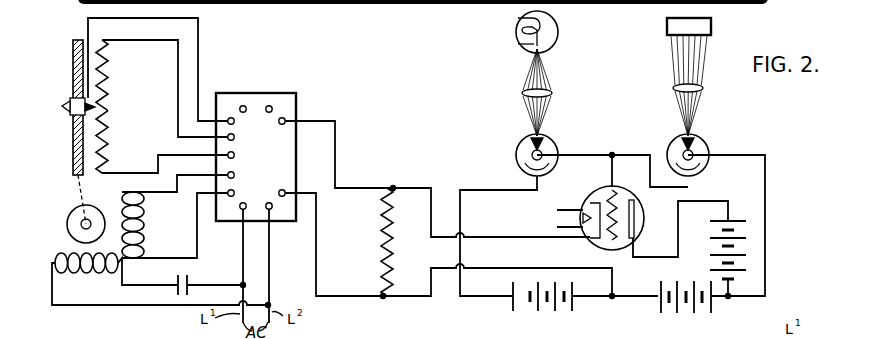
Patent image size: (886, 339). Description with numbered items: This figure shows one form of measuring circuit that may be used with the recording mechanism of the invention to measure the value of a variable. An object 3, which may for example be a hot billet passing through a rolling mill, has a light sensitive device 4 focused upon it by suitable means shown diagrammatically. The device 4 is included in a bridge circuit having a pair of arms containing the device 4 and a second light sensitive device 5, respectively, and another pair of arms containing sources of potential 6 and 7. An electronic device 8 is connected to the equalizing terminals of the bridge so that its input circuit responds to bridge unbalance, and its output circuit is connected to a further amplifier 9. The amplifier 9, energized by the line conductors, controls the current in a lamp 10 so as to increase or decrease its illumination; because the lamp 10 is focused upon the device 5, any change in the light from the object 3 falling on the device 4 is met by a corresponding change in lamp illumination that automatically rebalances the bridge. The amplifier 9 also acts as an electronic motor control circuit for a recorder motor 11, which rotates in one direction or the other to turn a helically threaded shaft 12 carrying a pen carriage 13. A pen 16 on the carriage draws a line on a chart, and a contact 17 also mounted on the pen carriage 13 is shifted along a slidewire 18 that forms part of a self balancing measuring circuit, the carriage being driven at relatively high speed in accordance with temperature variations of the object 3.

The object 3 is at (700, 30).
The light sensitive device 4 is at (707, 146).
The second light sensitive device 5 is at (554, 146).
The source of potential 6 is at (518, 306).
The source of potential 7 is at (661, 306).
The electronic device 8 is at (598, 196).
The amplifier 9 is at (292, 100).
The lamp 10 is at (560, 36).
The recorder motor 11 is at (75, 208).
The helically threaded shaft 12 is at (73, 50).
The pen carriage 13 is at (75, 108).
The pen 16 is at (67, 103).
The contact 17 is at (98, 100).
The slidewire 18 is at (106, 122).